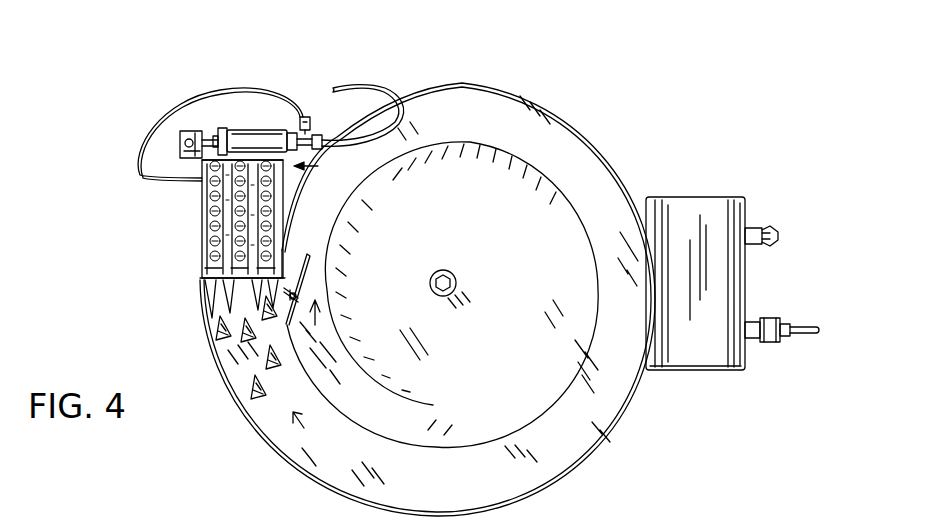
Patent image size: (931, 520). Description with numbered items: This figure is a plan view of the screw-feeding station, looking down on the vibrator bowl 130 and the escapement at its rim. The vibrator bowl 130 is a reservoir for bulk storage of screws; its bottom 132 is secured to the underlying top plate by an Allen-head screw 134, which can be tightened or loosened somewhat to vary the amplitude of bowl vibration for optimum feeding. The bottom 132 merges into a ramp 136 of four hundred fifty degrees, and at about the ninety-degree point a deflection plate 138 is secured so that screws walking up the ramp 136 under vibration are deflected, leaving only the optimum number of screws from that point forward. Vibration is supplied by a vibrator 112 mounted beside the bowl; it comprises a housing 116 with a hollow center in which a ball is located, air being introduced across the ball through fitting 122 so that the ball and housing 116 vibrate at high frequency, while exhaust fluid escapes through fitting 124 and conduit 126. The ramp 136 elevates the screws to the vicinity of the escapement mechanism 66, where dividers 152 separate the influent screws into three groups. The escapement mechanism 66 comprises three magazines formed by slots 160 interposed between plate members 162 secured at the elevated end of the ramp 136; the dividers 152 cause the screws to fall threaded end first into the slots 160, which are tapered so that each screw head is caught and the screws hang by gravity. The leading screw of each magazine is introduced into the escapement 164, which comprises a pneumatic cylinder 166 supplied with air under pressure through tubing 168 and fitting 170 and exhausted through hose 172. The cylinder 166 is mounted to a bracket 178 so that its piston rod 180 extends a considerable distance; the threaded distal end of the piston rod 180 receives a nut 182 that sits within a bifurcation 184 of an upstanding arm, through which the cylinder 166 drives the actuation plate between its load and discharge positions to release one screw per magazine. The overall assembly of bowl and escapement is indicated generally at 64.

The cleaning unit housing 64 is at (640, 108).
The escapement mechanism 66 is at (152, 180).
The vibrator 112 is at (700, 190).
The housing 116 is at (738, 372).
The fitting 122 is at (780, 236).
The fitting 124 is at (770, 345).
The conduit 126 is at (805, 340).
The vibrator bowl 130 is at (634, 410).
The bottom 132 is at (511, 367).
The Allen-head screw 134 is at (458, 283).
The ramp 136 is at (483, 129).
The deflection plate 138 is at (312, 276).
The dividers 152 is at (212, 302).
The slots 160 is at (230, 270).
The plate members 162 is at (226, 228).
The escapement 164 is at (320, 165).
The pneumatic cylinder 166 is at (258, 128).
The tubing 168 is at (366, 89).
The fitting 170 is at (318, 134).
The hose 172 is at (270, 56).
The bracket 178 is at (252, 130).
The piston rod 180 is at (208, 140).
The nut 182 is at (190, 130).
The bifurcation 184 is at (150, 124).